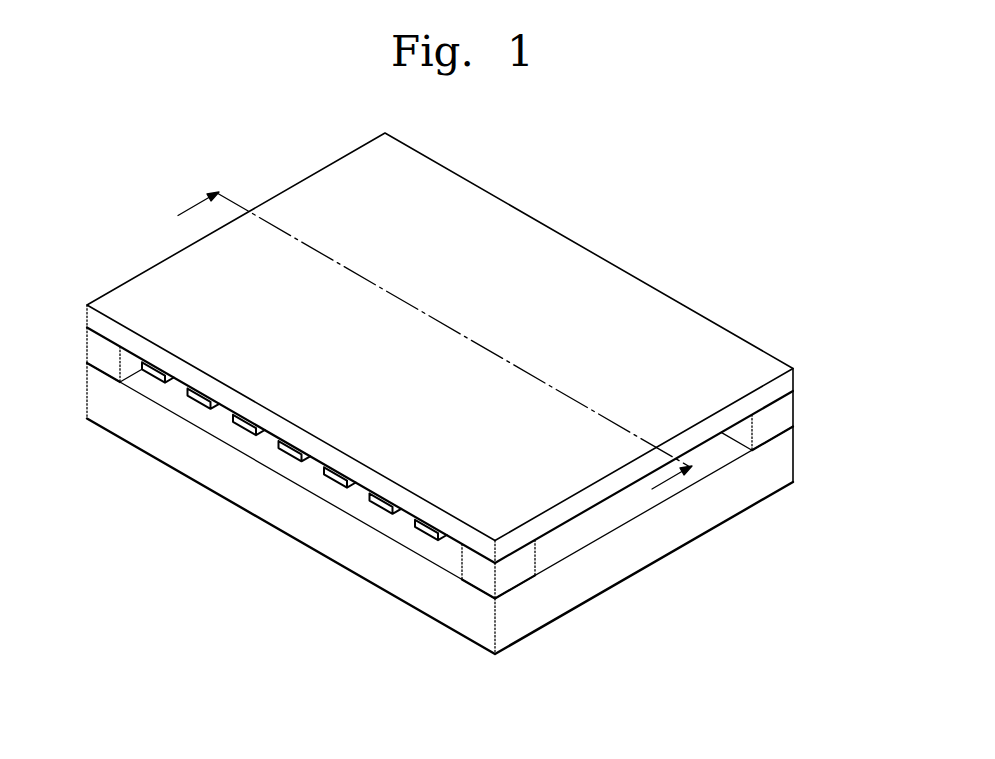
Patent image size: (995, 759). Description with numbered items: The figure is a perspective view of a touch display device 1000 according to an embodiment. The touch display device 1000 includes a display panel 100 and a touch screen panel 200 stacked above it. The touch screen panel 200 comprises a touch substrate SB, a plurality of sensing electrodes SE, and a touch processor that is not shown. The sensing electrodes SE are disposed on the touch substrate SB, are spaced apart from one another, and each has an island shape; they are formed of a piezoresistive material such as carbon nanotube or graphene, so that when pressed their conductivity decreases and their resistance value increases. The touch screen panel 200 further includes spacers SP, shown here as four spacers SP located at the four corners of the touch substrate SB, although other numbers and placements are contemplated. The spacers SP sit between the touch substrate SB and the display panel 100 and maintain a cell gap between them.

The touch display device 1000 is at (697, 219).
The display panel 100 is at (786, 461).
The touch screen panel 200 is at (485, 348).
The touch substrate SB is at (587, 262).
The spacer SP is at (94, 348).
The sensing electrode SE is at (195, 399).